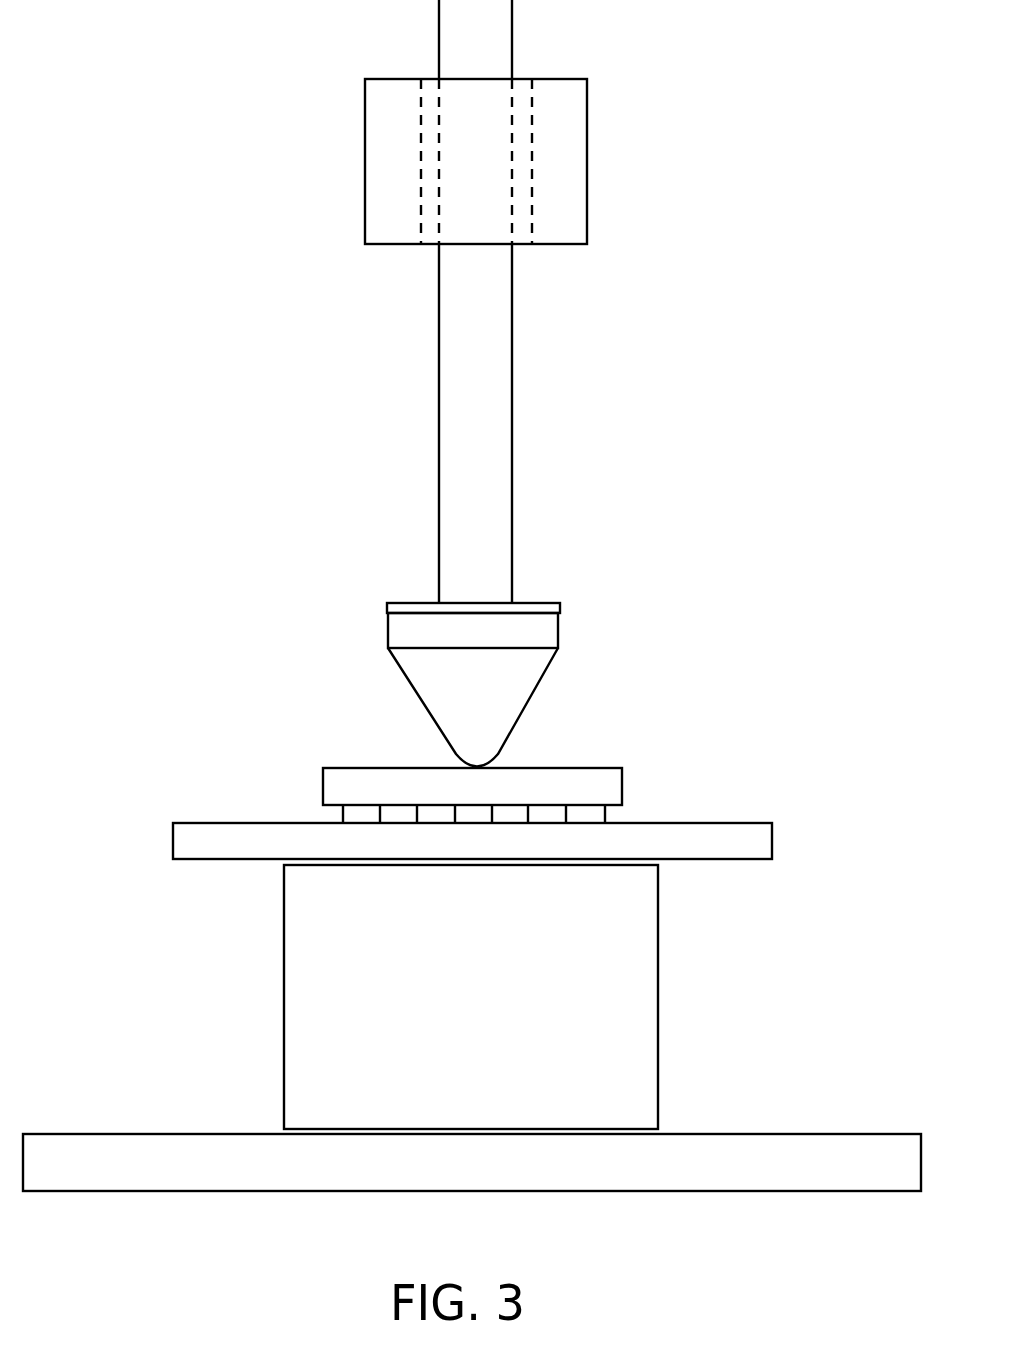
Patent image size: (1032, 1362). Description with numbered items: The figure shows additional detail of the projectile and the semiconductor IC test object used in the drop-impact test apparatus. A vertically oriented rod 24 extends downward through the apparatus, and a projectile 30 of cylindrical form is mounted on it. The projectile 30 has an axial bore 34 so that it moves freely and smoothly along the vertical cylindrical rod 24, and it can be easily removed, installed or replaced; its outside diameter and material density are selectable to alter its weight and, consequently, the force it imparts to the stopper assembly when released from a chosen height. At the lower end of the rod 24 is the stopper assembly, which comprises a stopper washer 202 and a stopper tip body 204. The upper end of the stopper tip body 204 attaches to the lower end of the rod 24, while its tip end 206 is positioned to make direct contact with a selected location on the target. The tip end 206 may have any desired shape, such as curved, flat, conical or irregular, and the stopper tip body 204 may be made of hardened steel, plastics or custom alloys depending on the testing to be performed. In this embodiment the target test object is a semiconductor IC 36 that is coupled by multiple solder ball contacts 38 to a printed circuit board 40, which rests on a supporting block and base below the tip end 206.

The vertically oriented rod 24 is at (512, 400).
The projectile 30 is at (587, 143).
The axial bore 34 is at (522, 103).
The stopper washer 202 is at (537, 602).
The stopper tip body 204 is at (512, 698).
The tip end 206 is at (500, 759).
The semiconductor IC 36 is at (560, 782).
The solder ball contacts 38 is at (408, 818).
The printed circuit board 40 is at (757, 837).